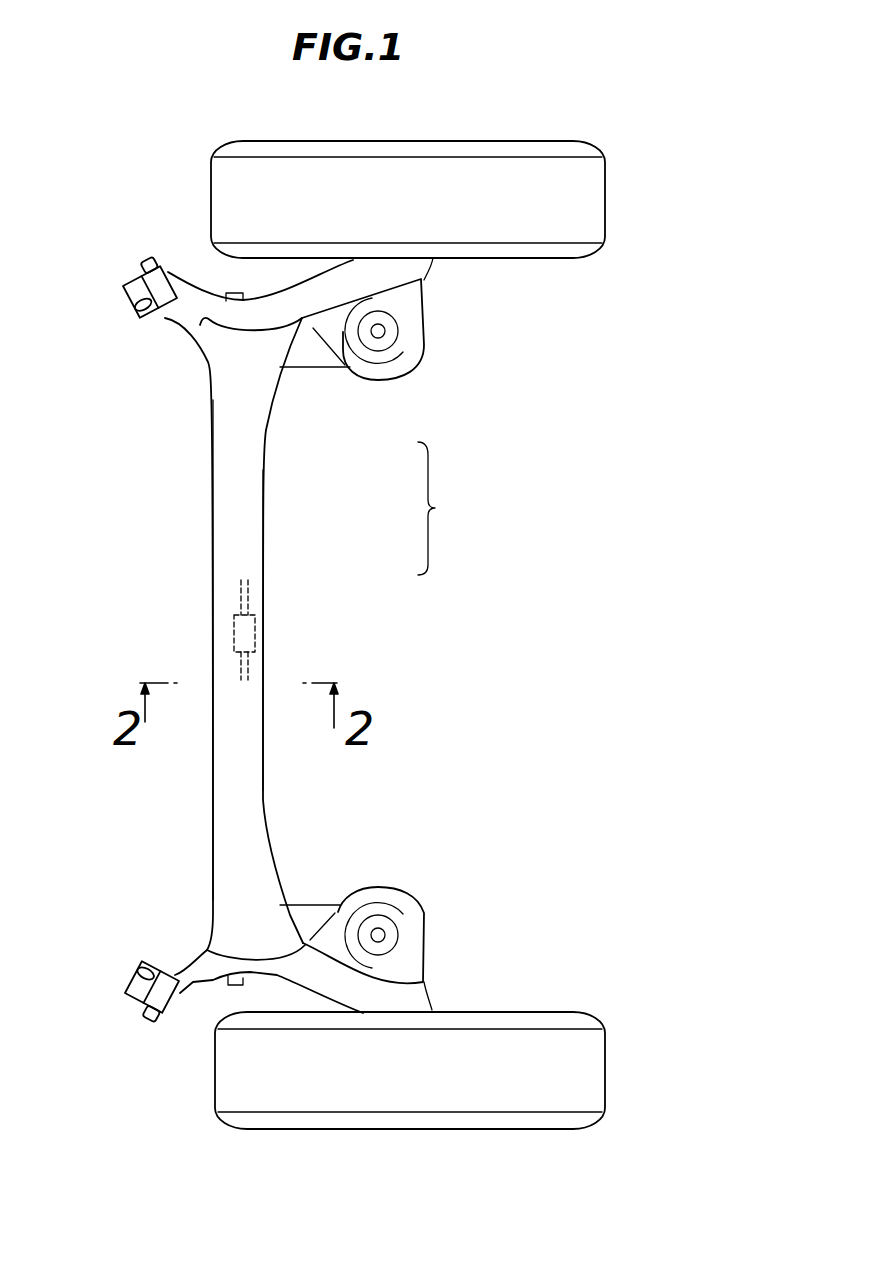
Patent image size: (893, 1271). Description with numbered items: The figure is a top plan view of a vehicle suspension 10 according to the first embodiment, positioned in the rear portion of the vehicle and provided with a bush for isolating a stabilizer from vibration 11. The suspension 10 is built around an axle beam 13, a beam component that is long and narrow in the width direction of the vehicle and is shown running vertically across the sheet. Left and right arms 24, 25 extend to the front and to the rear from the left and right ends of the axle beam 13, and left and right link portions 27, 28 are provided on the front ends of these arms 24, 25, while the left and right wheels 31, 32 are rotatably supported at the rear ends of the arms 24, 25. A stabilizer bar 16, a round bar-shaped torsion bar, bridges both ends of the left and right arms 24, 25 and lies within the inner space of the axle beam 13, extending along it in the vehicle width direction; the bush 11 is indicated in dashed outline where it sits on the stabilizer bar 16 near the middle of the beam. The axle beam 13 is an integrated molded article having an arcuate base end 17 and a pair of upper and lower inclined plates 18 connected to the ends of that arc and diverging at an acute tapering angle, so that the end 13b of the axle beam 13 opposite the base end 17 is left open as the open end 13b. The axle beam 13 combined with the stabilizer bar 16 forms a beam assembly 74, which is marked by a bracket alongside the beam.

The vehicle suspension 10 is at (126, 190).
The bush for isolating a stabilizer from vibration 11 is at (236, 630).
The axle beam 13 is at (265, 493).
The open end 13b is at (213, 765).
The stabilizer bar 16 is at (248, 597).
The base end 17 is at (265, 757).
The inclined plate 18 is at (250, 797).
The left arm 24 is at (395, 987).
The right arm 25 is at (395, 272).
The left link portion 27 is at (132, 995).
The right link portion 28 is at (128, 282).
The left wheel 31 is at (517, 1129).
The right wheel 32 is at (537, 140).
The beam assembly 74 is at (444, 508).